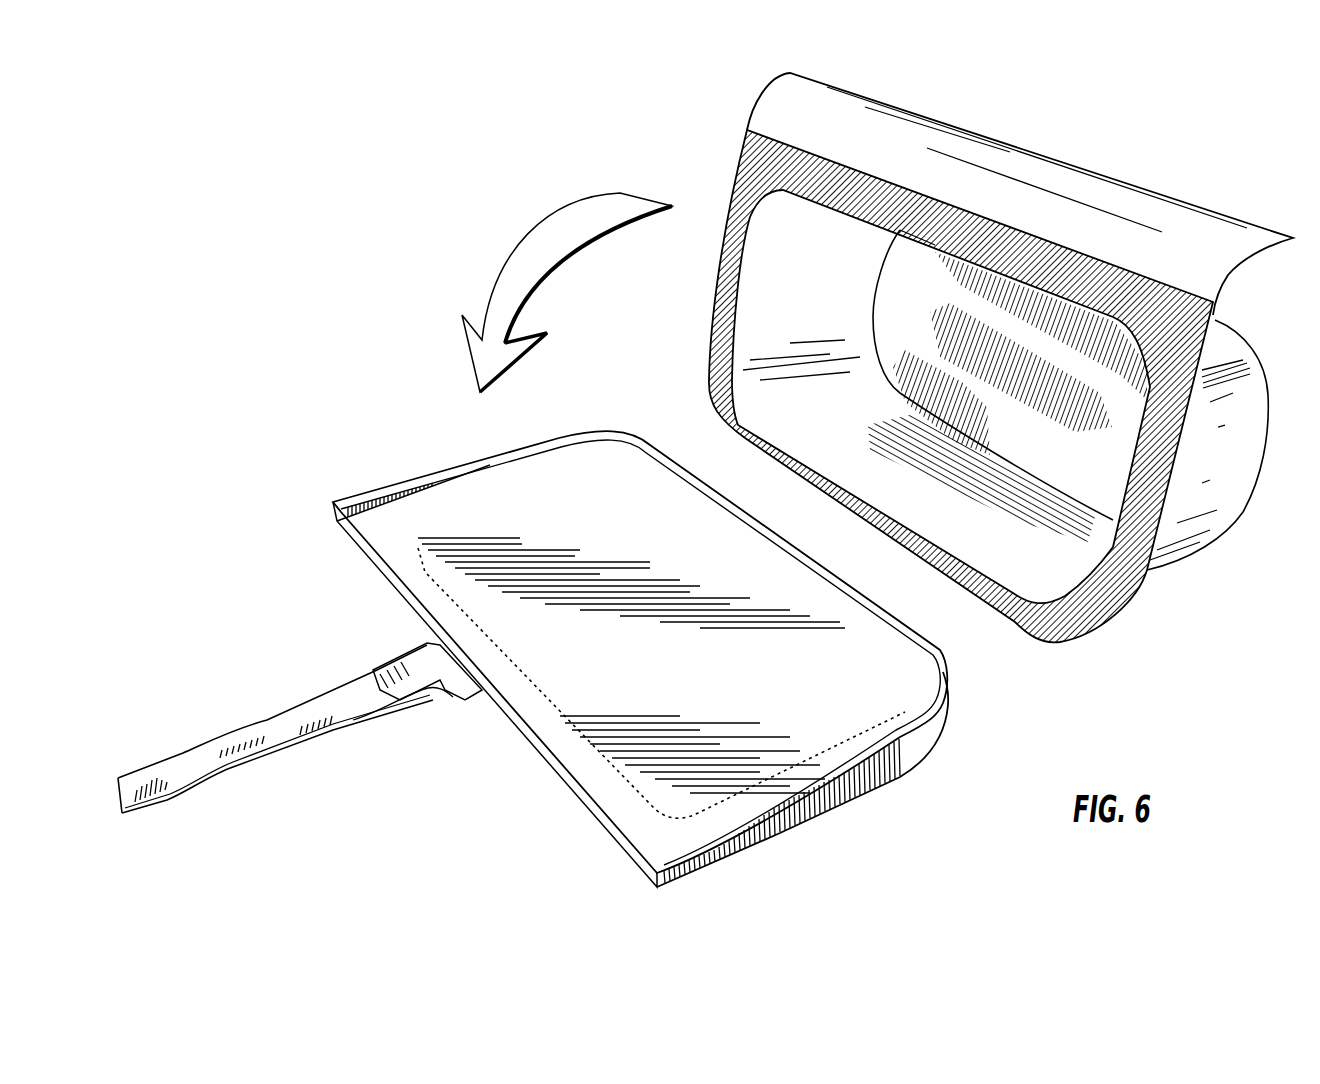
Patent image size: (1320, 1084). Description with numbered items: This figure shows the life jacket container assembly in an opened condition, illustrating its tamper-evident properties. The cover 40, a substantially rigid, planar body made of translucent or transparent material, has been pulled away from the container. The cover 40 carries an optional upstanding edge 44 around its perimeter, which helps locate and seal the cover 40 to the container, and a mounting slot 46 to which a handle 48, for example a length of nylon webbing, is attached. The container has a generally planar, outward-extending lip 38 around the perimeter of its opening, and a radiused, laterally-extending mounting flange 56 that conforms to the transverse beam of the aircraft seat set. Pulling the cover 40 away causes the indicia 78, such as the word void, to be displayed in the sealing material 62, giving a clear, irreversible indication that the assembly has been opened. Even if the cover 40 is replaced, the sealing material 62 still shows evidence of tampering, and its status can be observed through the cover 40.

The lip 38 is at (733, 192).
The cover 40 is at (813, 830).
The upstanding edge 44 is at (673, 875).
The mounting slot 46 is at (440, 720).
The handle 48 is at (238, 747).
The mounting flange 56 is at (1128, 203).
The sealing material 62 is at (1103, 613).
The indicia 78 is at (1147, 570).